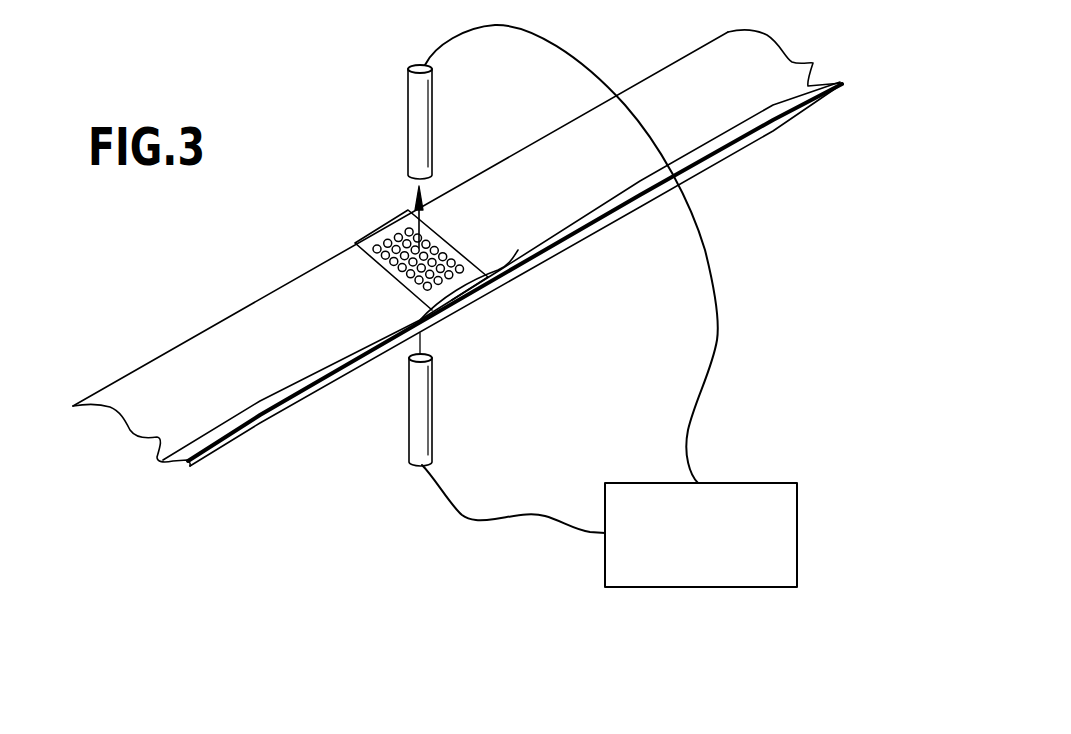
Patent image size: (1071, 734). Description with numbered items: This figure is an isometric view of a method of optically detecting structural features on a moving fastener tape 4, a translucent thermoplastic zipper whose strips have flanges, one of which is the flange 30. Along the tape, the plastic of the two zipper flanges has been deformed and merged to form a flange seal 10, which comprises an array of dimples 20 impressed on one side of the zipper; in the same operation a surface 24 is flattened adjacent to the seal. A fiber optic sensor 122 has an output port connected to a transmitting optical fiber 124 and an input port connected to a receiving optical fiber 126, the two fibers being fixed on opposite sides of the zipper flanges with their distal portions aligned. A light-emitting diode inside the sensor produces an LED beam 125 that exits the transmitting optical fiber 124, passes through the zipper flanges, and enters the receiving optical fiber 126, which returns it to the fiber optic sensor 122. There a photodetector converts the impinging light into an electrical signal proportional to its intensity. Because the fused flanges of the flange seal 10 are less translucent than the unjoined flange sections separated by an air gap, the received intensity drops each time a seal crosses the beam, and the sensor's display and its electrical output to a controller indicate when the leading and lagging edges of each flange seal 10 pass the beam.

The fastener tape 4 is at (718, 165).
The flange seal 10 is at (369, 254).
The array of dimples 20 is at (399, 243).
The flattened surface 24 is at (461, 298).
The flange 30 is at (217, 357).
The fiber optic sensor 122 is at (797, 526).
The transmitting optical fiber 124 is at (433, 407).
The LED beam 125 is at (425, 235).
The receiving optical fiber 126 is at (408, 123).